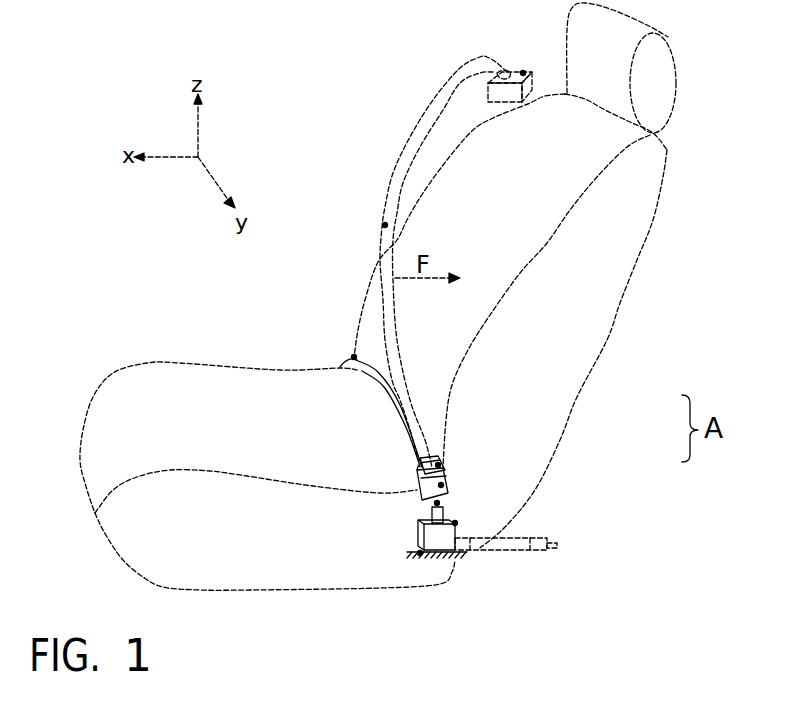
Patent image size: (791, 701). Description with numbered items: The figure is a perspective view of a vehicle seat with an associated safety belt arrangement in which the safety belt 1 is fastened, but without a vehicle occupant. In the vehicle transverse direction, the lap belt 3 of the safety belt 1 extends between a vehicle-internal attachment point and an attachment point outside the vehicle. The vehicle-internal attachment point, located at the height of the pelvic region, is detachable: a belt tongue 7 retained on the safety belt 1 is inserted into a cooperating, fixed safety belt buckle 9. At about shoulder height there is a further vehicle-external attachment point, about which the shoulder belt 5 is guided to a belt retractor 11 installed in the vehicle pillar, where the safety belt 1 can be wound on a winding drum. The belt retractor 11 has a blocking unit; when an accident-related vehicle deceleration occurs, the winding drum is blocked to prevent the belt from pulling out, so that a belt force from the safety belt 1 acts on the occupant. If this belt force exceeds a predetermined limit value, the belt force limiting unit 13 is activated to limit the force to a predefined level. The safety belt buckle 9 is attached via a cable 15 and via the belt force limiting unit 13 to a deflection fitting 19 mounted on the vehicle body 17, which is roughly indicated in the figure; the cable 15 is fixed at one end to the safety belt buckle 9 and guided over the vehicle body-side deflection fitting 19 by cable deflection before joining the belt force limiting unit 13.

The safety belt 1 is at (273, 230).
The lap belt 3 is at (354, 357).
The shoulder belt 5 is at (385, 225).
The belt tongue 7 is at (443, 465).
The safety belt buckle 9 is at (440, 487).
The belt retractor 11 is at (523, 73).
The belt force limiting unit 13 is at (553, 560).
The cable 15 is at (440, 503).
The vehicle body 17 is at (420, 553).
The deflection fitting 19 is at (455, 523).